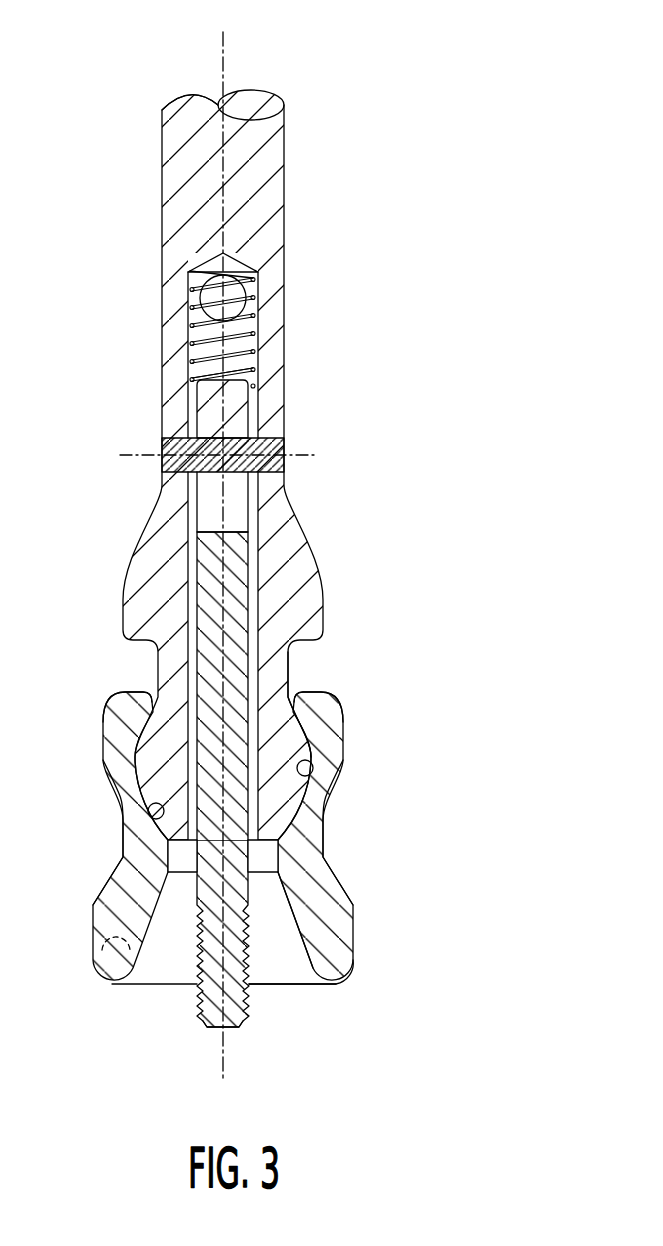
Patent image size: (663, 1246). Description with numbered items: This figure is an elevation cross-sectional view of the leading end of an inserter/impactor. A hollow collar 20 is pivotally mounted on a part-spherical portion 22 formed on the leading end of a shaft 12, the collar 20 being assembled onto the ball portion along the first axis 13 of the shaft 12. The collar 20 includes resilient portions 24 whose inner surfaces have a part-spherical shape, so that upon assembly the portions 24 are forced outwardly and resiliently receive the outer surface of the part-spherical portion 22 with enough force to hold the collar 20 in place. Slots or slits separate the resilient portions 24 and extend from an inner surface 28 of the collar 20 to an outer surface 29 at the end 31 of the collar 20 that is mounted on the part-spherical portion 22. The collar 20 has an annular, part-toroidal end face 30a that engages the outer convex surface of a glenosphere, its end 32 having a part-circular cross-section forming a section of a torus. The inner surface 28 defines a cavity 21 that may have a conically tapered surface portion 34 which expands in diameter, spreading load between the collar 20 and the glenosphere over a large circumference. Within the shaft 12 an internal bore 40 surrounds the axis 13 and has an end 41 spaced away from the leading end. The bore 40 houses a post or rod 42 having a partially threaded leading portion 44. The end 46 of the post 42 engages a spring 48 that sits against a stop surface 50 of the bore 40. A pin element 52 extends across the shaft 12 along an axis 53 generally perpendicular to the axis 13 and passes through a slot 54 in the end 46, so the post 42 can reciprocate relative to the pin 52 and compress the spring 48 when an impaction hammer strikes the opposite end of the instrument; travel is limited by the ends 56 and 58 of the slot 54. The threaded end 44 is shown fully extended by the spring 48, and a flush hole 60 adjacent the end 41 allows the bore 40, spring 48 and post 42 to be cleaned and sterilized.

The shaft 12 is at (170, 222).
The first axis 13 is at (223, 60).
The hollow collar 20 is at (353, 878).
The cavity 21 is at (186, 951).
The part-spherical portion 22 is at (150, 780).
The resilient portions 24 is at (118, 710).
The inner surface 28 is at (313, 768).
The outer surface 29 is at (346, 733).
The part-toroidal end face 30a is at (343, 985).
The end of the collar 31 is at (320, 703).
The end of the collar 32 is at (100, 958).
The conically tapered surface portion 34 is at (297, 927).
The internal bore 40 is at (190, 397).
The end of bore 41 is at (207, 260).
The post or rod 42 is at (215, 607).
The partially threaded leading portion 44 is at (200, 1005).
The end of post 46 is at (240, 382).
The spring 48 is at (200, 305).
The stop surface 50 is at (246, 262).
The pin element 52 is at (287, 460).
The axis of pin 53 is at (287, 457).
The slot 54 is at (121, 437).
The end of slot 56 is at (207, 433).
The end of slot 58 is at (240, 530).
The flush hole 60 is at (237, 300).